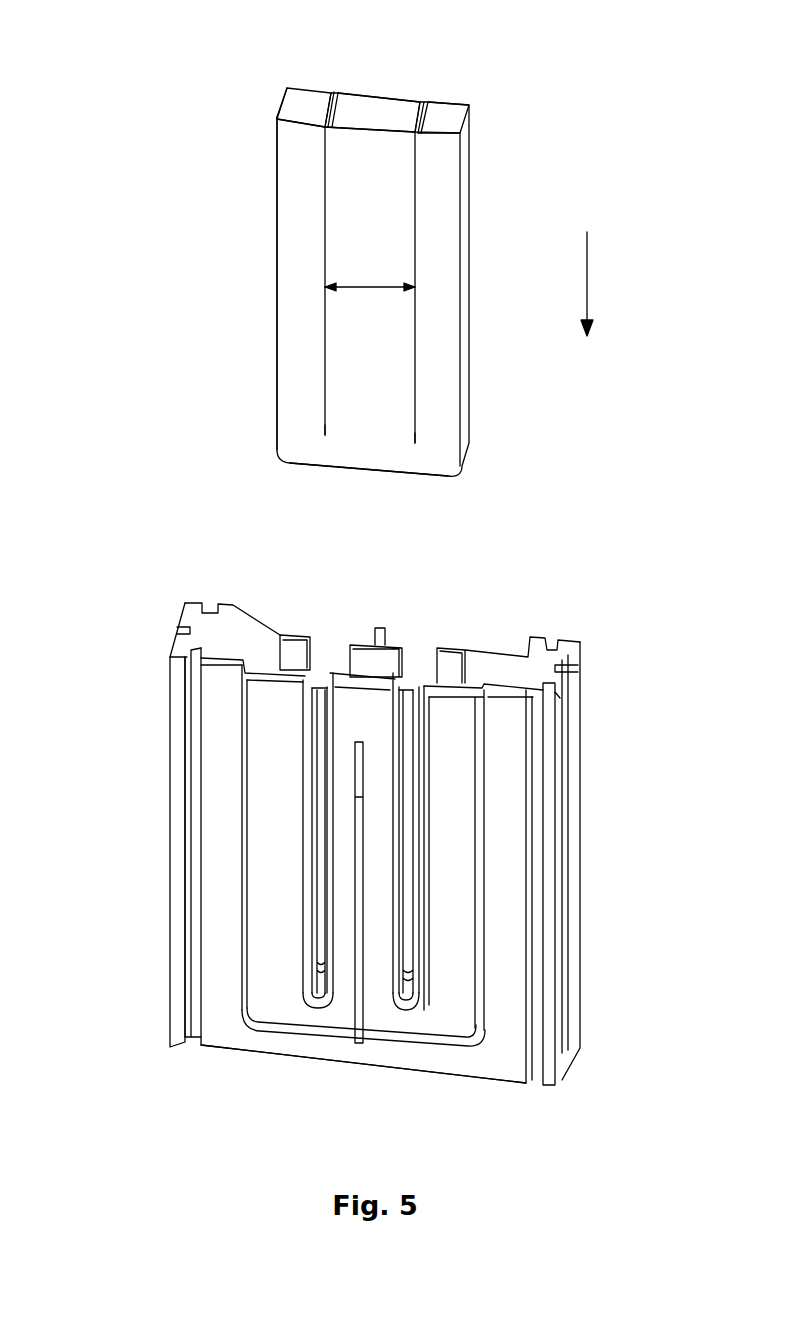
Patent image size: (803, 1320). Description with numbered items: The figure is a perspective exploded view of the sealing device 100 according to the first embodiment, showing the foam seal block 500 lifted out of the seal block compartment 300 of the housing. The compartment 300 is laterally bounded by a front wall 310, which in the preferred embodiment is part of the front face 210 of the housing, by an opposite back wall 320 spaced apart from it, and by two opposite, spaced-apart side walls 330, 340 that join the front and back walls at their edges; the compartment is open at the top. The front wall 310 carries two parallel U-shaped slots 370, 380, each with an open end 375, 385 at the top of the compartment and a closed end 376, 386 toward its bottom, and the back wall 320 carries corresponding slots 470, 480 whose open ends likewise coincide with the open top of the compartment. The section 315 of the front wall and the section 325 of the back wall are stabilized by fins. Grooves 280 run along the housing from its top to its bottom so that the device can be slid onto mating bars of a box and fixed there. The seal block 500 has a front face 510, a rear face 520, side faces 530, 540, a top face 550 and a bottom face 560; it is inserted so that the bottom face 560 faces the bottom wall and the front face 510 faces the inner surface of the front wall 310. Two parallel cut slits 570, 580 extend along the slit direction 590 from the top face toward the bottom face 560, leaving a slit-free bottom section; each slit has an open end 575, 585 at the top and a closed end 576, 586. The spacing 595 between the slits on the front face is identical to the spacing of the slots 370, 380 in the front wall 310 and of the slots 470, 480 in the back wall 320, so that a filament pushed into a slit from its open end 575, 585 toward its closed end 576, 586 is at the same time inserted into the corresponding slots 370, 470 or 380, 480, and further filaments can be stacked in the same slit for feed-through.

The sealing device 100 is at (567, 1109).
The front face 210 is at (222, 1040).
The grooves 280 is at (180, 632).
The seal block compartment 300 is at (388, 672).
The front wall 310 is at (289, 633).
The sections of the front wall 315 is at (367, 925).
The back wall 320 is at (358, 642).
The section of the back wall 325 is at (371, 628).
The side wall 330 is at (184, 607).
The side wall 340 is at (455, 652).
The slot 370 is at (318, 765).
The open end 375 is at (322, 683).
The closed end 376 is at (318, 1000).
The slot 380 is at (407, 852).
The open end 385 is at (408, 690).
The closed end 386 is at (408, 1008).
The slot 470 is at (325, 655).
The slot 480 is at (413, 668).
The seal block 500 is at (252, 62).
The front face 510 is at (299, 297).
The rear face 520 is at (385, 89).
The side face 530 is at (276, 179).
The side face 540 is at (465, 242).
The top face 550 is at (303, 92).
The bottom face 560 is at (380, 470).
The slit 570 is at (322, 242).
The left groove 575 is at (323, 127).
The closed end 576 is at (323, 435).
The slit 580 is at (415, 322).
The right groove 585 is at (415, 132).
The closed end 586 is at (415, 443).
The slit direction 590 is at (592, 275).
The spacing 595 is at (375, 283).